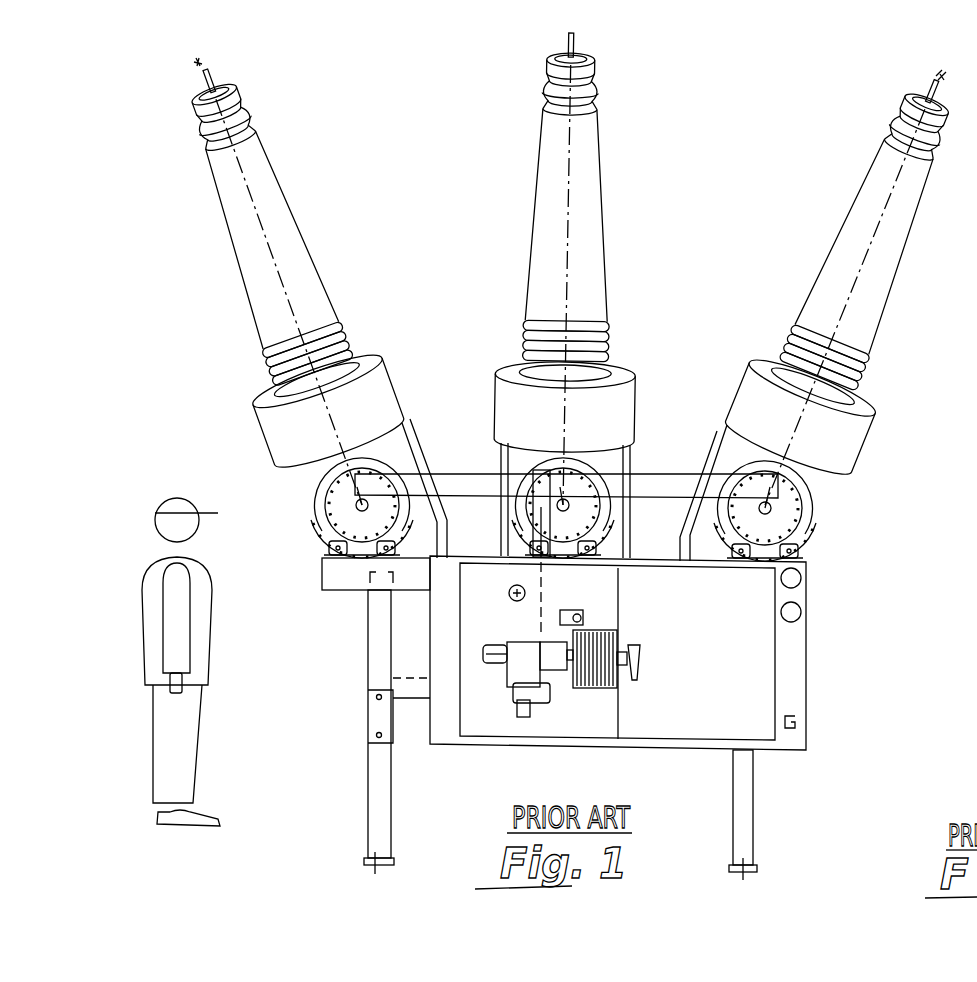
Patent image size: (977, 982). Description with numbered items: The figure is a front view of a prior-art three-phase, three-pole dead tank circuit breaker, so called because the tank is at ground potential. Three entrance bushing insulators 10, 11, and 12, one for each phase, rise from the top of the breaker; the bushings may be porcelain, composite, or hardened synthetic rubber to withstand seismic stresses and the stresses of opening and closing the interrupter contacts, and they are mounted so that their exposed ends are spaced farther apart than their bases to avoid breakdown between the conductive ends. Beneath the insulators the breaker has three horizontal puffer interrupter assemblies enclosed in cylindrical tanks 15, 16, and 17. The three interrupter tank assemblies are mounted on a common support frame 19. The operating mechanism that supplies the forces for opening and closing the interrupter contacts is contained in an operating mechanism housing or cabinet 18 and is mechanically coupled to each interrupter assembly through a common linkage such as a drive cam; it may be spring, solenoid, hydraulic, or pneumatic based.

The entrance bushing insulator 10 is at (262, 182).
The entrance bushing insulator 11 is at (592, 200).
The entrance bushing insulator 12 is at (910, 203).
The cylindrical tank 15 is at (397, 453).
The cylindrical tank 16 is at (607, 468).
The cylindrical tank 17 is at (813, 507).
The operating mechanism housing or cabinet 18 is at (735, 675).
The common support frame 19 is at (357, 803).